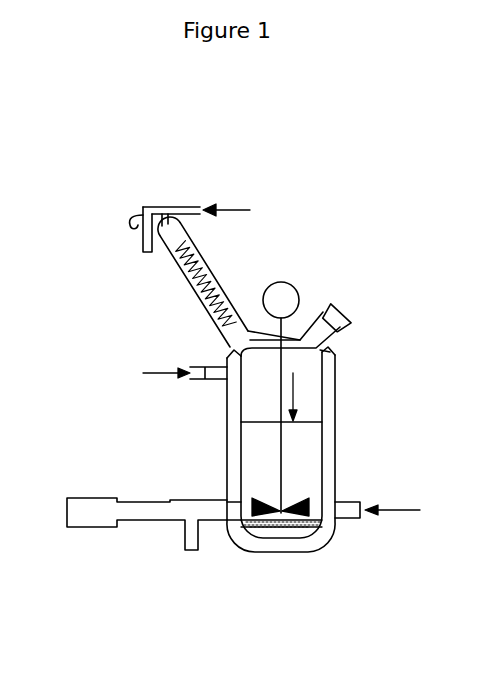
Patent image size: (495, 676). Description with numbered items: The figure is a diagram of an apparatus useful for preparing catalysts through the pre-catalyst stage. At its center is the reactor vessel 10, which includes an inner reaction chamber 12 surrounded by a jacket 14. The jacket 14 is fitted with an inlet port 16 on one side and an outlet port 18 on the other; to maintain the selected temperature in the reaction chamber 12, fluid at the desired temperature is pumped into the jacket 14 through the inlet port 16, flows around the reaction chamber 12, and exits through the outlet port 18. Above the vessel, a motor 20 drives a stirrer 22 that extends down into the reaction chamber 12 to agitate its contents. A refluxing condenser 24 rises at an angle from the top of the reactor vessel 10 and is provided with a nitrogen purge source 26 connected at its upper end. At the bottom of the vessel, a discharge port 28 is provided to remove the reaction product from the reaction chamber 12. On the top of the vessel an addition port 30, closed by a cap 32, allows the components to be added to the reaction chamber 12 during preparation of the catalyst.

The reactor vessel 10 is at (345, 418).
The reaction chamber 12 is at (305, 385).
The jacket 14 is at (305, 455).
The inlet port 16 is at (390, 510).
The outlet port 18 is at (160, 373).
The motor 20 is at (280, 282).
The stirrer 22 is at (300, 500).
The refluxing condenser 24 is at (185, 278).
The nitrogen purge source 26 is at (250, 210).
The discharge port 28 is at (185, 540).
The addition port 30 is at (318, 352).
The cap 32 is at (343, 310).